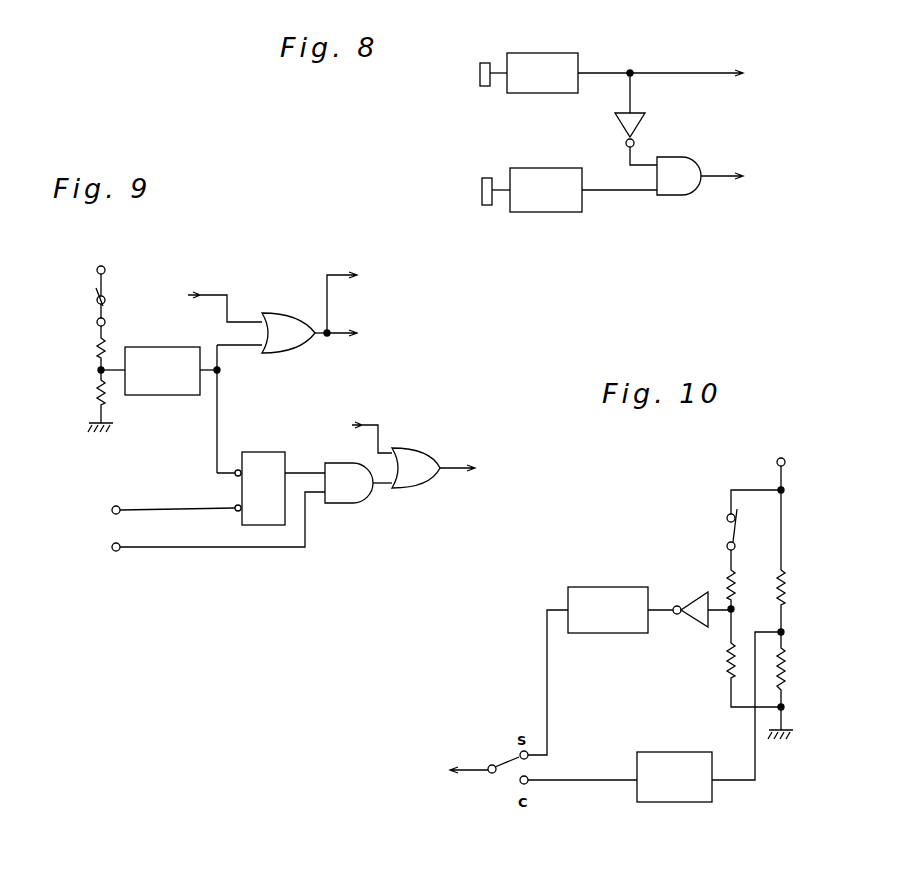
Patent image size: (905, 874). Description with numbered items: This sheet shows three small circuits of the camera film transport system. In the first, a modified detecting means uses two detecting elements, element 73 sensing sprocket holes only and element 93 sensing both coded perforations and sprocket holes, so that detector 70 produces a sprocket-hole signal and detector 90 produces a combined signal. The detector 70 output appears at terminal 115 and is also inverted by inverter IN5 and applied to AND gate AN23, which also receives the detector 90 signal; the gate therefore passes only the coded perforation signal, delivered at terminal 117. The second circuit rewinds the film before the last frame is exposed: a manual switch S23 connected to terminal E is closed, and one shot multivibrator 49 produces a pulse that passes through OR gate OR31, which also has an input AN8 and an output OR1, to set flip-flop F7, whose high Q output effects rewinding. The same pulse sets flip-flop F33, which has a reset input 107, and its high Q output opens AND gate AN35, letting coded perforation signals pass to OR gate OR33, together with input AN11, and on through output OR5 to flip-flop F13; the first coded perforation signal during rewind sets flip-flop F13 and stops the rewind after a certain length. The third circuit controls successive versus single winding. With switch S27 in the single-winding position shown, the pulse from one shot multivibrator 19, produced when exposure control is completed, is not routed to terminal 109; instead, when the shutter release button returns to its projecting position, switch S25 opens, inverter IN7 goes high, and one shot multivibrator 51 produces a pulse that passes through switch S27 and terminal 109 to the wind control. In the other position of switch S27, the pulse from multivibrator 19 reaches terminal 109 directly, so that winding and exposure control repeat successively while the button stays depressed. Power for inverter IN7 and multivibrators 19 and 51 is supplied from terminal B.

In FIG. 8, the detector 70 is at (540, 56).
In FIG. 8, the detecting element 73 is at (479, 68).
In FIG. 8, the terminal 115 is at (685, 74).
In FIG. 8, the inverter IN5 is at (645, 125).
In FIG. 8, the detecting element 93 is at (481, 186).
In FIG. 8, the detector 90 is at (543, 213).
In FIG. 8, the output terminal / signal line 117 is at (747, 179).
In FIG. 9, the output terminal / signal line 117 is at (189, 529).
In FIG. 8, the AND gate AN23 is at (685, 196).
In FIG. 9, the terminal E is at (101, 267).
In FIG. 9, the switch S23 is at (96, 306).
In FIG. 9, the one shot multivibrator 49 is at (190, 396).
In FIG. 9, the AND gate input signal AN8 is at (202, 299).
In FIG. 9, the OR gate OR31 is at (285, 326).
In FIG. 9, the OR gate output signal OR1 is at (369, 300).
In FIG. 9, the flip-flop F7 is at (358, 336).
In FIG. 9, the flip-flop F33 is at (262, 452).
In FIG. 9, the input terminal 107 is at (144, 513).
In FIG. 9, the AND gate AN35 is at (346, 504).
In FIG. 9, the AND gate input signal AN11 is at (379, 422).
In FIG. 9, the OR gate OR33 is at (418, 483).
In FIG. 9, the output signal OR5 is at (485, 455).
In FIG. 9, the flip-flop F13 is at (503, 488).
In FIG. 10, the terminal B is at (778, 500).
In FIG. 10, the switch S25 is at (731, 530).
In FIG. 10, the one shot multivibrator 51 is at (627, 587).
In FIG. 10, the inverter IN7 is at (690, 616).
In FIG. 10, the one shot multivibrator 19 is at (712, 796).
In FIG. 10, the switch S27 is at (498, 765).
In FIG. 10, the terminal 109 is at (444, 785).